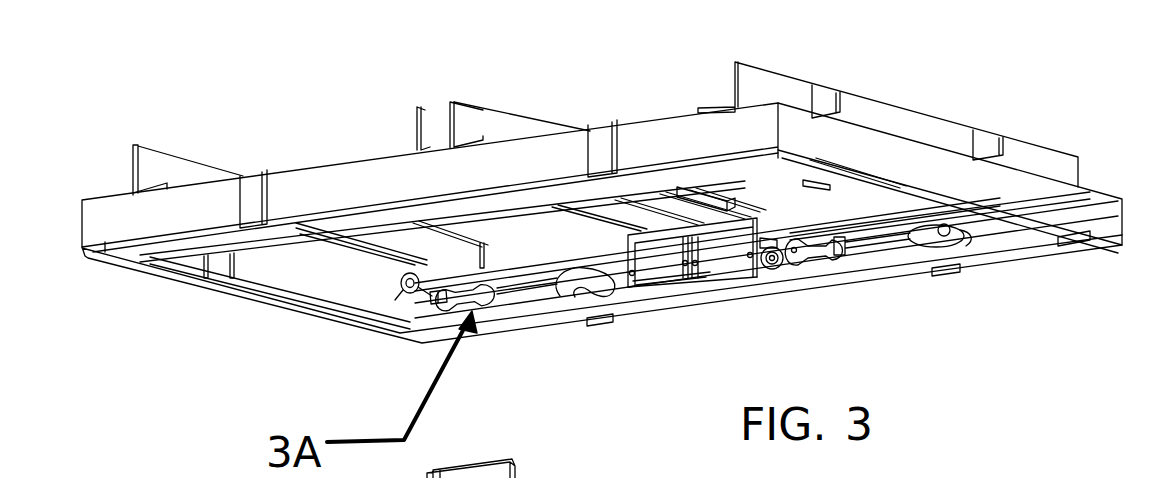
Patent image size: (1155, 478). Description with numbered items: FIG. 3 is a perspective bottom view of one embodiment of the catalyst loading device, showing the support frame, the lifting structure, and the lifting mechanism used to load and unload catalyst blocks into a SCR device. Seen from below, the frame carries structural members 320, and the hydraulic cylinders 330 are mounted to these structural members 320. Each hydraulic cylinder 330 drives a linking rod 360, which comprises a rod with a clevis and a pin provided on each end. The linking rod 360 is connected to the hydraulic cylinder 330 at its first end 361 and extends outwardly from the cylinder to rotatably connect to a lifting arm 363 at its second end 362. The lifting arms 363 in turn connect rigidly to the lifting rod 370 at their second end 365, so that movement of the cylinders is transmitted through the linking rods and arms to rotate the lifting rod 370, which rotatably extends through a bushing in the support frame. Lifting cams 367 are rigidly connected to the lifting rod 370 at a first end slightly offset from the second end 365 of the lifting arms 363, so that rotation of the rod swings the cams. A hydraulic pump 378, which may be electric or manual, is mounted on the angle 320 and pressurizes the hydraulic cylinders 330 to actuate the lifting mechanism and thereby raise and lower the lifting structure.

The structural member 320 is at (483, 130).
The hydraulic cylinder 330 is at (713, 255).
The linking rod 360 is at (510, 297).
The first end 361 is at (625, 298).
The second end 362 is at (440, 297).
The lifting arm 363 is at (960, 245).
The second end 365 is at (427, 300).
The lifting cam 367 is at (438, 303).
The lifting rod 370 is at (340, 263).
The hydraulic pump 378 is at (708, 197).